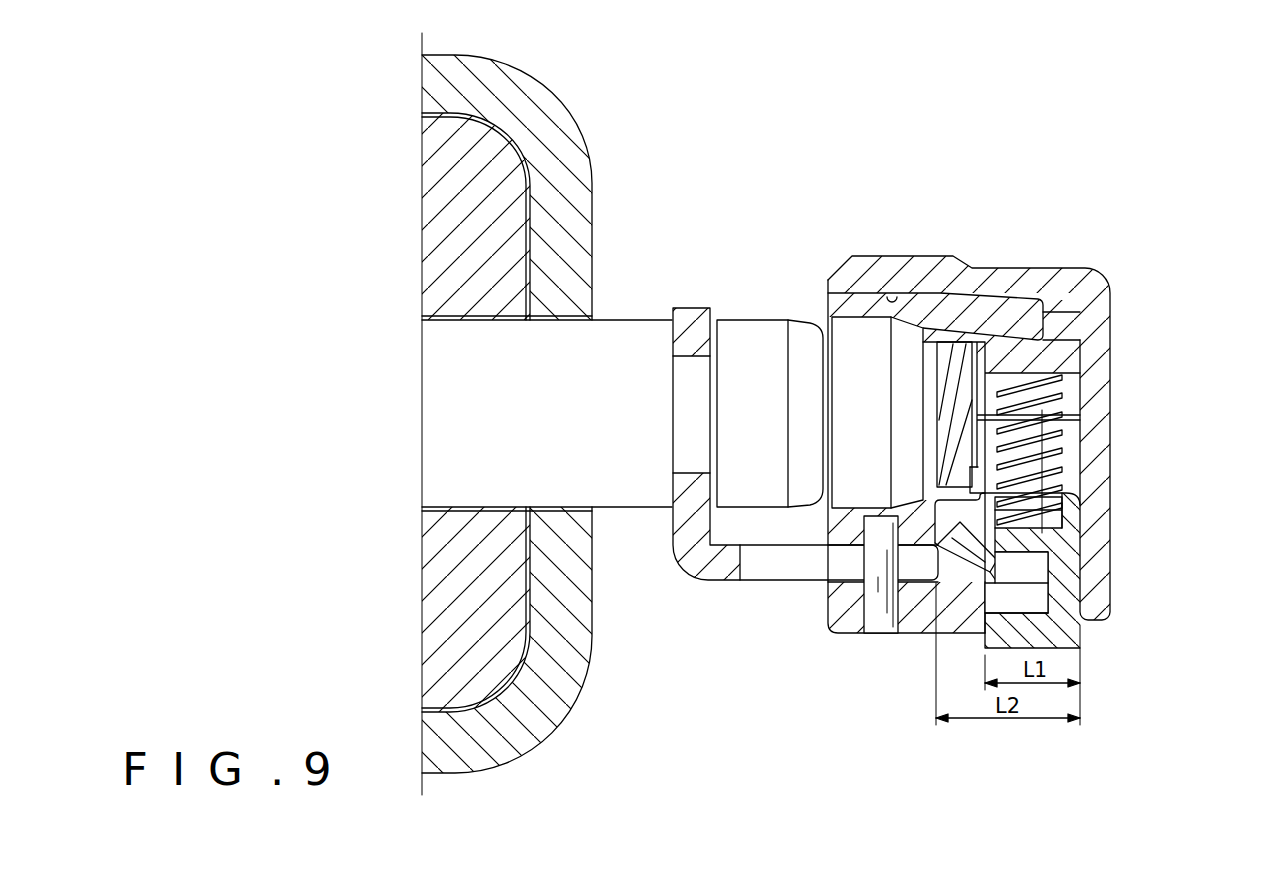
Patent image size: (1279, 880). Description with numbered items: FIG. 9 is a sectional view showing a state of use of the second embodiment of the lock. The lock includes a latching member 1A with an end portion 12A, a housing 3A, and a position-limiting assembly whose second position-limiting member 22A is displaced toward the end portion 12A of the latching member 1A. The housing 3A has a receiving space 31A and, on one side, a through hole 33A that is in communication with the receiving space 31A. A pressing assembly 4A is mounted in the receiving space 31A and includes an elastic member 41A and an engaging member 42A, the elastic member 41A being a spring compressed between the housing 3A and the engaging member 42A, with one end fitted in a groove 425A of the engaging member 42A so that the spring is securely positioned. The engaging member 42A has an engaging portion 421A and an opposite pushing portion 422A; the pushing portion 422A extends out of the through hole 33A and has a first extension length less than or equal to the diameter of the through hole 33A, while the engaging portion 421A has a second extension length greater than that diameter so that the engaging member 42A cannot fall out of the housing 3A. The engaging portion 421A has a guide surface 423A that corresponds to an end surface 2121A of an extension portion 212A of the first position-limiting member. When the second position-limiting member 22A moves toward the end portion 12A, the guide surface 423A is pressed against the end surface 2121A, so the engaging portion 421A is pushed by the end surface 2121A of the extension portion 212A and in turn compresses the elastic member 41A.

The latching member 1A is at (621, 336).
The end portion 12A is at (757, 338).
The extension portion 212A is at (723, 583).
The end surface 2121A is at (905, 636).
The second position-limiting member 22A is at (913, 308).
The housing 3A is at (1098, 302).
The receiving space 31A is at (1063, 322).
The through hole 33A is at (1030, 597).
The pressing assembly 4A is at (1099, 511).
The elastic member 41A is at (1050, 468).
The engaging member 42A is at (1075, 535).
The engaging portion 421A is at (1035, 583).
The pushing portion 422A is at (1063, 650).
The guide surface 423A is at (977, 530).
The groove 425A is at (1030, 552).